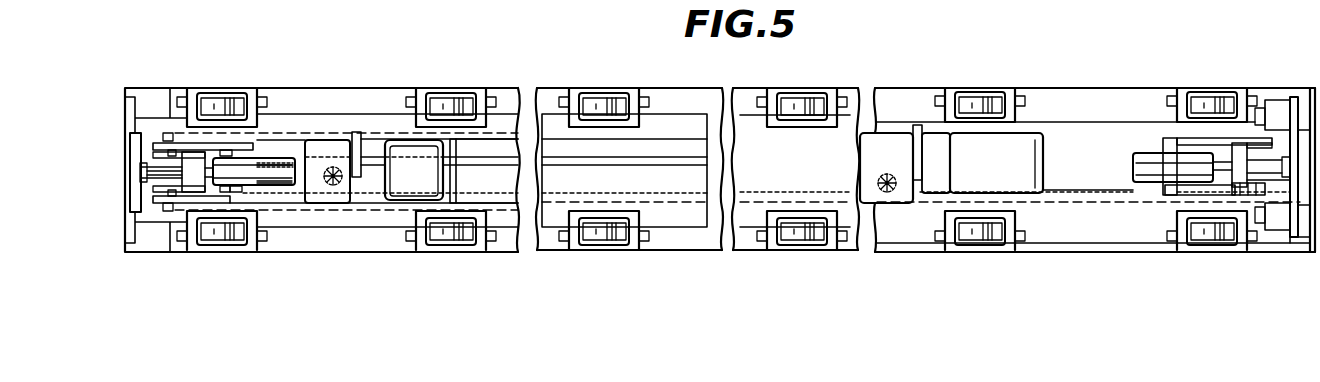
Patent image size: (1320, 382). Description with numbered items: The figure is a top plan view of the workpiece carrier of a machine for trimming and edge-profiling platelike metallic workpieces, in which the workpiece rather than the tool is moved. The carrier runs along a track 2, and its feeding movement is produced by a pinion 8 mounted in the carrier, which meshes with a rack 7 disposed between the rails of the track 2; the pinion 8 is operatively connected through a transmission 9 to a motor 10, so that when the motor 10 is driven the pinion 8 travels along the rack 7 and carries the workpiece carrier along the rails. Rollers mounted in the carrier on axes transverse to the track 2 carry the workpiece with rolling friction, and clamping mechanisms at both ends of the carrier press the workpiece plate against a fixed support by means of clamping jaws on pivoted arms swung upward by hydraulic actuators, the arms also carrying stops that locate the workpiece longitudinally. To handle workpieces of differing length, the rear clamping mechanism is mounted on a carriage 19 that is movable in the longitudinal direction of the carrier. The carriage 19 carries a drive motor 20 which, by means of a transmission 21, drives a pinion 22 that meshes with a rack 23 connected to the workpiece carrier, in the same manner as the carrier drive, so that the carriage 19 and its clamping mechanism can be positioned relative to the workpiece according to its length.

The track 2 is at (1300, 110).
The rack 7 is at (1057, 196).
The pinion 8 is at (887, 196).
The transmission 9 is at (888, 160).
The motor 10 is at (1027, 157).
The carriage 19 is at (452, 183).
The drive motor 20 is at (425, 178).
The transmission 21 is at (335, 153).
The pinion 22 is at (343, 193).
The rack 23 is at (512, 138).